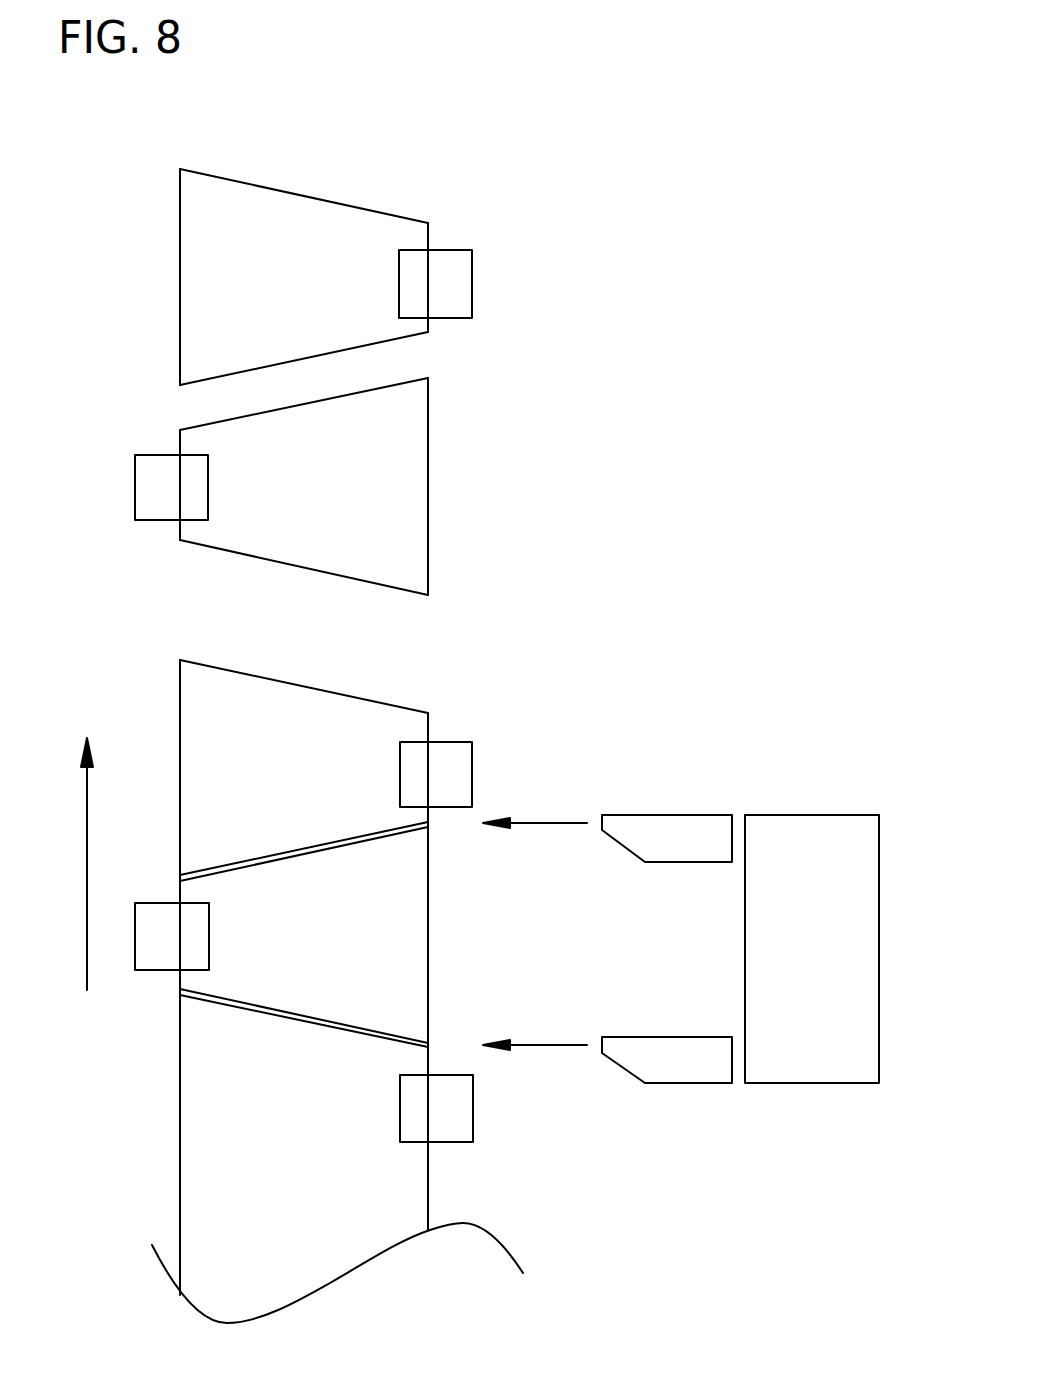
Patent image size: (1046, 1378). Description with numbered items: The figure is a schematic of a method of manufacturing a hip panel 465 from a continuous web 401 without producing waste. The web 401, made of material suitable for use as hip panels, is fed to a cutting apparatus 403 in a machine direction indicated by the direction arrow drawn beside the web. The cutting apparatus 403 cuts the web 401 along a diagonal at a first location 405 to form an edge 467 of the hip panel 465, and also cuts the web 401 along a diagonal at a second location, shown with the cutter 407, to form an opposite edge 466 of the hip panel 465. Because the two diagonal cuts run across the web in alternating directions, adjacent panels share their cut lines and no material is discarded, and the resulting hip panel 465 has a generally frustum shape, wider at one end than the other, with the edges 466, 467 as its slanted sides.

The continuous web 401 is at (393, 1202).
The cutting apparatus 403 is at (777, 815).
The first cutting location 405 is at (670, 1037).
The upper nozzle 407 is at (661, 815).
The hip panel 465 is at (437, 235).
The opposite edge 466 is at (337, 352).
The edge 467 is at (282, 190).